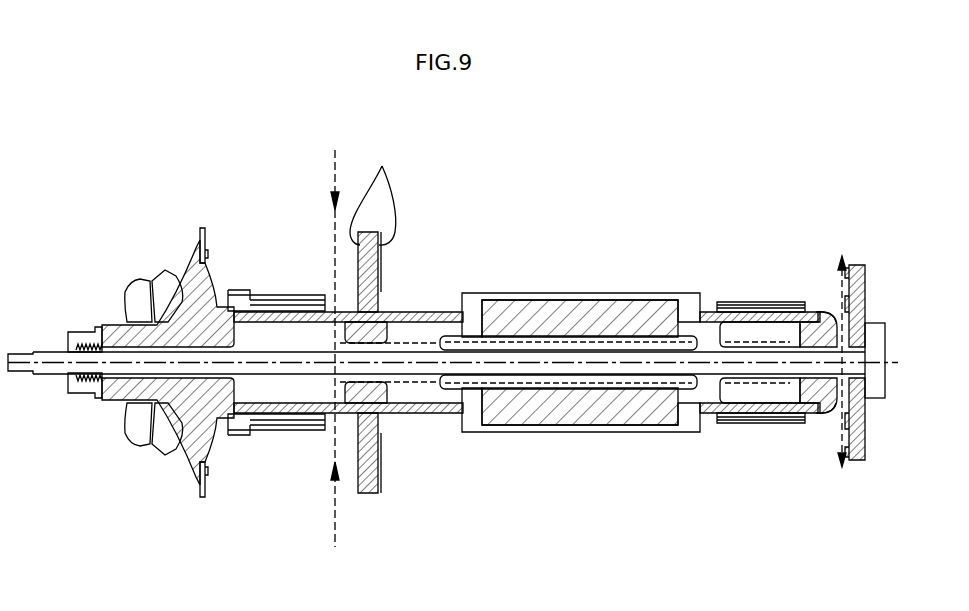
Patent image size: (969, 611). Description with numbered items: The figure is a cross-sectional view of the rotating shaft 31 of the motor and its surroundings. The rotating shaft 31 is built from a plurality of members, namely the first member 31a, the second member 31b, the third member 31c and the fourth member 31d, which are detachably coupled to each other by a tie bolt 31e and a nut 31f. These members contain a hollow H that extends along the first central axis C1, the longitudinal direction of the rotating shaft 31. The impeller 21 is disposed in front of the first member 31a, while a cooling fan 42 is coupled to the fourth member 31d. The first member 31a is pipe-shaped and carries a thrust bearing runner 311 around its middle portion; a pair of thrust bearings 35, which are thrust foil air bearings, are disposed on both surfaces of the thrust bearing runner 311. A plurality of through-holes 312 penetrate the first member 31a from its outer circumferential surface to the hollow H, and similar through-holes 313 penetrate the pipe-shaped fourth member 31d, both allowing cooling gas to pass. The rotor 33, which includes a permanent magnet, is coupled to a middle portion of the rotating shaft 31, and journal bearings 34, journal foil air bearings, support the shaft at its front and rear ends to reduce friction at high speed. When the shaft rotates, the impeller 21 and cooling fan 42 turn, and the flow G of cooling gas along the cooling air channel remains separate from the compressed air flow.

The impeller 21 is at (178, 318).
The rotating shaft 31 is at (498, 229).
The first member 31a is at (425, 312).
The second member 31b is at (585, 293).
The third member 31c is at (778, 312).
The fourth member 31d is at (820, 317).
The tie bolt 31e is at (877, 325).
The nut 31f is at (88, 328).
The rotor 33 is at (582, 410).
The journal bearings 34 is at (282, 296).
The thrust bearings 35 is at (382, 166).
The thrust bearing runner 311 is at (380, 480).
The through-holes 312 is at (328, 418).
The through-holes 313 is at (837, 400).
The cooling fan 42 is at (852, 465).
The first central axis C1 is at (52, 364).
The flow of the cooling gas G is at (335, 180).
The hollow H is at (407, 393).